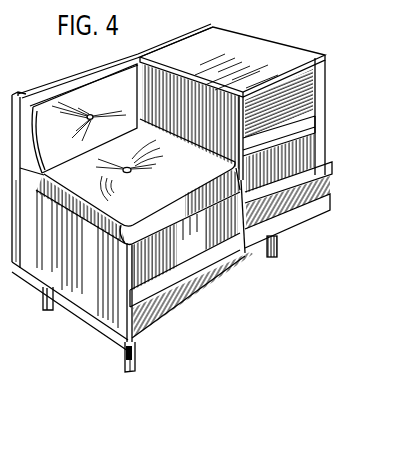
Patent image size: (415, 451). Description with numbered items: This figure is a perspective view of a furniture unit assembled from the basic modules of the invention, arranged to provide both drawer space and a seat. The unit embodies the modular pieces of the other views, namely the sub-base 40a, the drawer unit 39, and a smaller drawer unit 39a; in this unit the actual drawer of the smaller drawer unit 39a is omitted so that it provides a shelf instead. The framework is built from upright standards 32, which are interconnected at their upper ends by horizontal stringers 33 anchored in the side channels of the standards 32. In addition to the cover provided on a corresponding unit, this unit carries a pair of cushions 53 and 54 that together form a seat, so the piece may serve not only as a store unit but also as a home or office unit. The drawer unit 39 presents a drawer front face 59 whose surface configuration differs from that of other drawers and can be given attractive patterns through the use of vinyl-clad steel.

The standard 32 is at (11, 96).
The horizontal stringer 33 is at (82, 72).
The drawer unit 39 is at (218, 282).
The smaller drawer unit 39a is at (256, 43).
The sub-base 40a is at (126, 364).
The cushion 53 is at (174, 161).
The cushion 54 is at (140, 109).
The drawer front face 59 is at (213, 243).